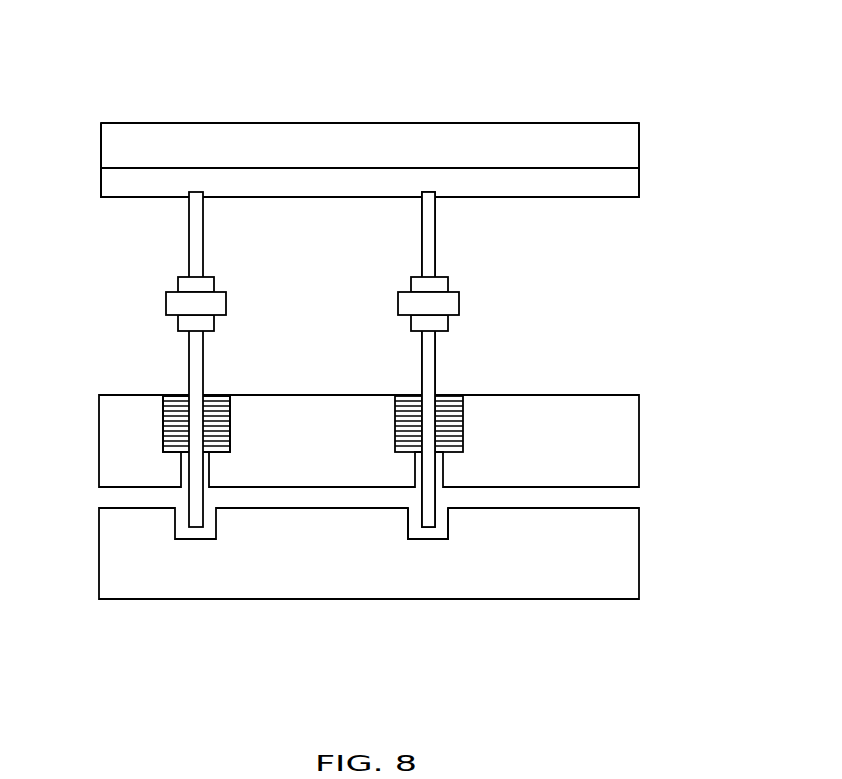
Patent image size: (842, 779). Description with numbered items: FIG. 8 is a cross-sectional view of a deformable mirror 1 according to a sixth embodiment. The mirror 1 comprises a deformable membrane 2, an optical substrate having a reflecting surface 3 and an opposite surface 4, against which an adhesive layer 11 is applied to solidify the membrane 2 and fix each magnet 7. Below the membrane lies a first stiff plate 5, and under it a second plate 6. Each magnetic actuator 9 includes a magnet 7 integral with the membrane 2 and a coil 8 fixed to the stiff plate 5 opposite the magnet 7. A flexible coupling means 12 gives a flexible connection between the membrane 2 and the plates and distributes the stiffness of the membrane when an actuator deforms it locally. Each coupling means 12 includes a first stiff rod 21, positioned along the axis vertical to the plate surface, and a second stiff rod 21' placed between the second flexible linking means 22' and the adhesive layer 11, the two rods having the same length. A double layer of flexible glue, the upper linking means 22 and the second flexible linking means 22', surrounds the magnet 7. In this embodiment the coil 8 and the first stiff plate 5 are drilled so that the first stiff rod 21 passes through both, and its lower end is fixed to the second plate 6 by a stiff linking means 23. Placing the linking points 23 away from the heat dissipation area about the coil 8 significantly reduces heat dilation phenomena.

The deformable mirror 1 is at (316, 112).
The deformable membrane 2 is at (580, 142).
The reflecting surface 3 is at (172, 122).
The opposite surface 4 is at (118, 165).
The adhesive layer 11 is at (620, 182).
The stiff plate 5 is at (133, 467).
The second plate 6 is at (142, 562).
The magnet 7 is at (175, 303).
The coil 8 is at (167, 428).
The magnetic actuator 9 is at (150, 412).
The flexible coupling means 12 is at (497, 298).
The first stiff rod 21 is at (483, 426).
The second stiff rod 21' is at (487, 237).
The upper linking means 22 is at (313, 344).
The second flexible linking means 22' is at (313, 265).
The stiff linking means 23 is at (442, 528).